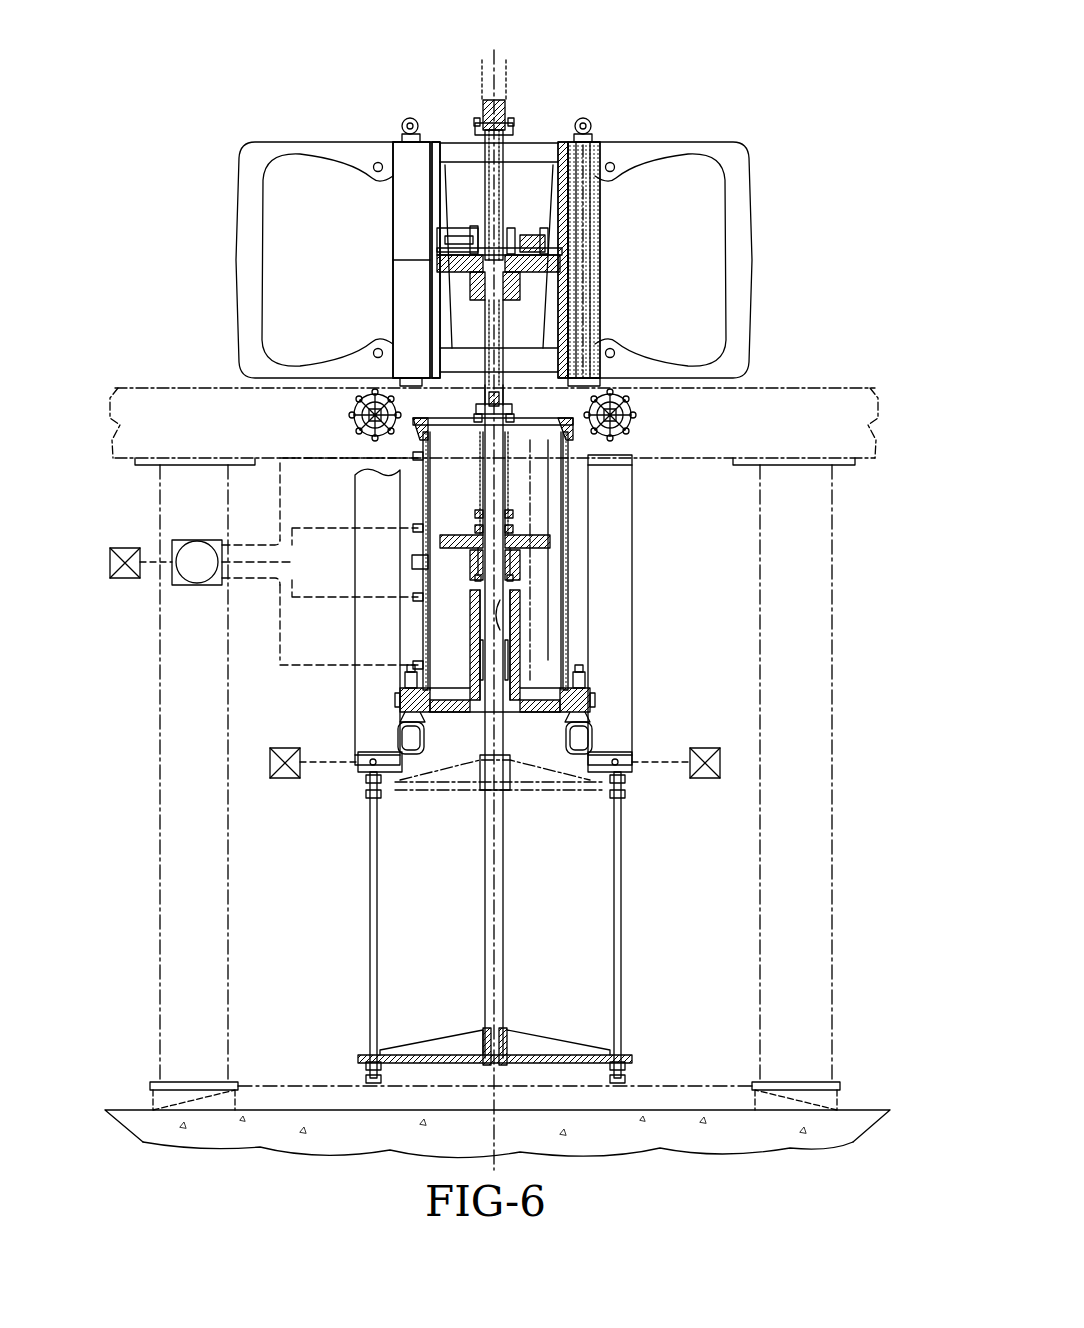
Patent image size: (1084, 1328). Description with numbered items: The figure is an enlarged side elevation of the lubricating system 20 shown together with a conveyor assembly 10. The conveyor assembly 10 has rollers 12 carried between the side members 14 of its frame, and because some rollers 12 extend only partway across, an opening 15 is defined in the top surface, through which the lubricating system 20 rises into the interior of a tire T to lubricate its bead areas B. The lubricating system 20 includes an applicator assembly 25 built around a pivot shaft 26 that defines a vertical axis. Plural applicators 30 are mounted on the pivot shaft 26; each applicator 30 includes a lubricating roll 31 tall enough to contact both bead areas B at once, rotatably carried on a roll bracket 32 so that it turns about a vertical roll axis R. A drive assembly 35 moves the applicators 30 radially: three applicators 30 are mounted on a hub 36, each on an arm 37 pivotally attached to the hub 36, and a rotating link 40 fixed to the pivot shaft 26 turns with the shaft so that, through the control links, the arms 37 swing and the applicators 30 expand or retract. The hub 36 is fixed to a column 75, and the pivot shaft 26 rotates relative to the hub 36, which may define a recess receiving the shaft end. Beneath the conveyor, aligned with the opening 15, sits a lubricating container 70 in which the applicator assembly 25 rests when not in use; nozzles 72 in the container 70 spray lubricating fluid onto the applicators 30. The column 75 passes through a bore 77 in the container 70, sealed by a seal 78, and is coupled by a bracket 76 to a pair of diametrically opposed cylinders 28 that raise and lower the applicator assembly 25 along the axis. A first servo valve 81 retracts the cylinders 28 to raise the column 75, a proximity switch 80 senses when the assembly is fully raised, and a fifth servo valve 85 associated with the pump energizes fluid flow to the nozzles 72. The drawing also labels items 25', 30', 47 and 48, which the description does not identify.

The conveyor assembly 10 is at (826, 410).
The rollers 12 is at (355, 422).
The side members 14 is at (200, 410).
The opening 15 is at (460, 408).
The lubricating system 20 is at (550, 125).
The applicator assembly 25 is at (362, 241).
The hydraulic cylinder 25' is at (493, 554).
The pivot shaft 26 is at (483, 250).
The cylinder 28 is at (622, 668).
The applicators 30 is at (503, 260).
The inner flange 30' is at (611, 560).
The lubricating roll 31 is at (410, 242).
The roll bracket 32 is at (405, 122).
The drive assembly 35 is at (470, 235).
The hub 36 is at (455, 262).
The arm 37 is at (522, 235).
The rotating link 40 is at (470, 240).
The axis of rotation 47 is at (510, 90).
The retaining nut 48 is at (482, 120).
The lubricating container 70 is at (410, 548).
The nozzles 72 is at (413, 528).
The column 75 is at (505, 338).
The bracket 76 is at (540, 1050).
The bore 77 is at (512, 600).
The seal 78 is at (470, 680).
The proximity switch 80 is at (705, 780).
The first servo valve 81 is at (285, 780).
The fifth servo valve 85 is at (125, 580).
The bead areas B is at (372, 178).
The tire T is at (748, 182).
The roll axis R is at (585, 233).